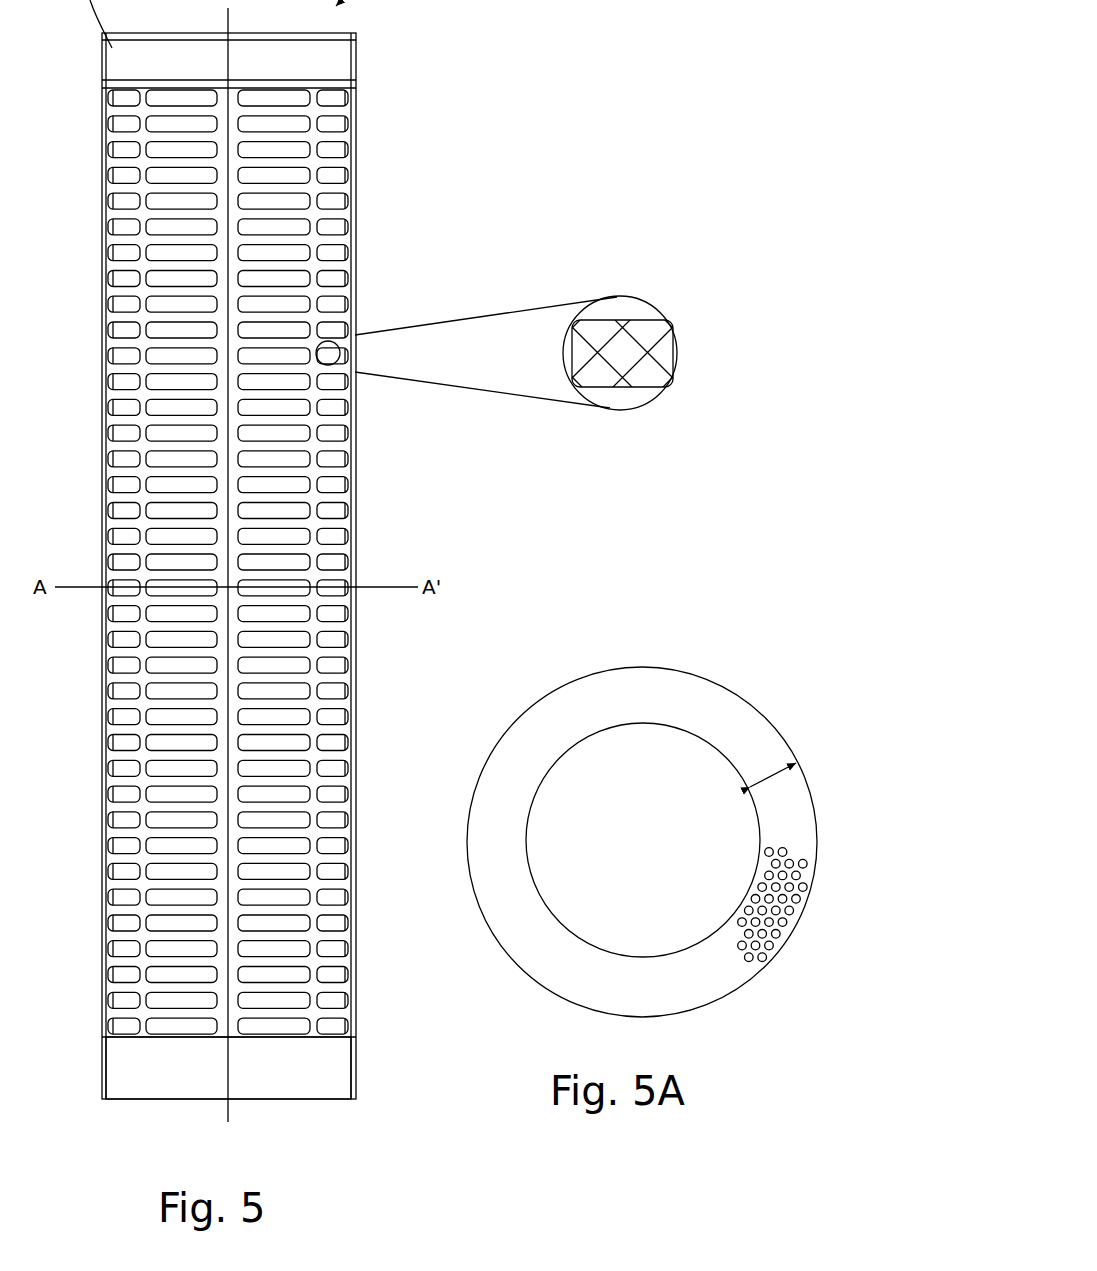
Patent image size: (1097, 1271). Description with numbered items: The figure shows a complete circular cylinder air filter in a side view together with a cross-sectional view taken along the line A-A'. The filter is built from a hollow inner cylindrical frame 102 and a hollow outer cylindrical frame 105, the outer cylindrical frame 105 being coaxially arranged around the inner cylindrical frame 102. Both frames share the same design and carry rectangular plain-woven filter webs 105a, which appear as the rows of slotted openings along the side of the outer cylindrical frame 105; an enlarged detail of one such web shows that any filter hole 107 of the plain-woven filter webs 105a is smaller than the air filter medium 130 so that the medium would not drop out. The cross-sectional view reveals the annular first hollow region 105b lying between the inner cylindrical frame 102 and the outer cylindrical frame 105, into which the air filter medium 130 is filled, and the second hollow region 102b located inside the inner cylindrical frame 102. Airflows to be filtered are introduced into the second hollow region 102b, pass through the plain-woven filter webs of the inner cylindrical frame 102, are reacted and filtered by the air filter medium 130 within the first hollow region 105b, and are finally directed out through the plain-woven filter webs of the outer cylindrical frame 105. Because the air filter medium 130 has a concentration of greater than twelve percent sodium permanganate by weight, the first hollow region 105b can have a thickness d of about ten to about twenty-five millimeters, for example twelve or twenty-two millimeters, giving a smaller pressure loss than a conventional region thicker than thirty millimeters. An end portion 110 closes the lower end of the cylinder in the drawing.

In FIG. 5, the outer cylindrical frame 105 is at (352, 212).
In FIG. 5A, the outer cylindrical frame 105 is at (757, 707).
In FIG. 5, the plain-woven filter webs 105a is at (288, 148).
In FIG. 5, the filter hole 107 is at (623, 370).
In FIG. 5, the bottom cap 110 is at (315, 1063).
In FIG. 5A, the inner cylindrical frame 102 is at (653, 723).
In FIG. 5A, the first hollow region 105b is at (618, 717).
In FIG. 5A, the second hollow region 102b is at (668, 865).
In FIG. 5A, the thickness d is at (782, 776).
In FIG. 5A, the air filter medium 130 is at (763, 963).